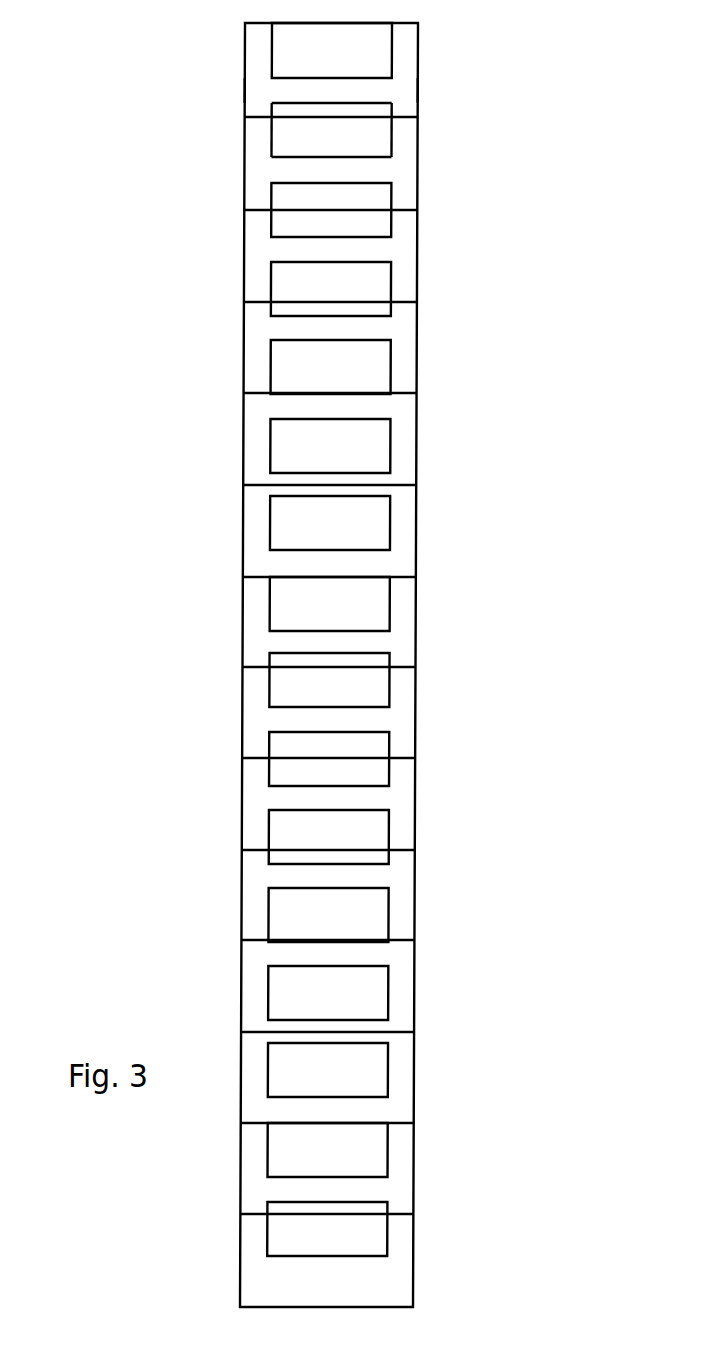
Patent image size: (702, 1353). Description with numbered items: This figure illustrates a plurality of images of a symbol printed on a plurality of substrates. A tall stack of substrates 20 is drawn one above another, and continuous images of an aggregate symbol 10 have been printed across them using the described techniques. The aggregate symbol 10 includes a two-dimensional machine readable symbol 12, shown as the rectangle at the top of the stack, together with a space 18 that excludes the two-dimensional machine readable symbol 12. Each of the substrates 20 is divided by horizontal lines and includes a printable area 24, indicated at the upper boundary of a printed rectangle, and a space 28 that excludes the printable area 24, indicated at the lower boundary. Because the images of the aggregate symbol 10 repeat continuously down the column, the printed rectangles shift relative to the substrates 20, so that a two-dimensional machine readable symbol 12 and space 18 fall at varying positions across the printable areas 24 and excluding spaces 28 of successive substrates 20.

The aggregate symbol 10 is at (383, 665).
The two-dimensional machine readable symbol 12 is at (285, 37).
The space 18 is at (285, 92).
The substrates 20 is at (415, 659).
The printable area 24 is at (243, 103).
The space 28 is at (243, 157).